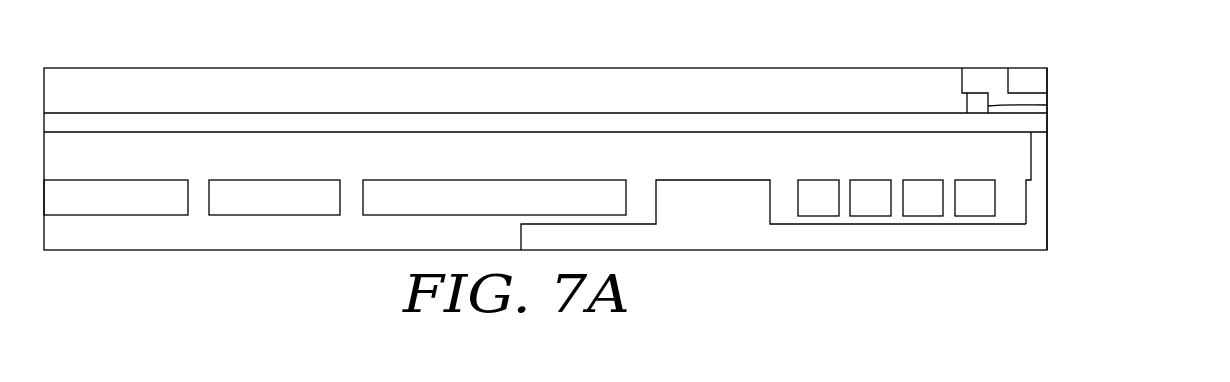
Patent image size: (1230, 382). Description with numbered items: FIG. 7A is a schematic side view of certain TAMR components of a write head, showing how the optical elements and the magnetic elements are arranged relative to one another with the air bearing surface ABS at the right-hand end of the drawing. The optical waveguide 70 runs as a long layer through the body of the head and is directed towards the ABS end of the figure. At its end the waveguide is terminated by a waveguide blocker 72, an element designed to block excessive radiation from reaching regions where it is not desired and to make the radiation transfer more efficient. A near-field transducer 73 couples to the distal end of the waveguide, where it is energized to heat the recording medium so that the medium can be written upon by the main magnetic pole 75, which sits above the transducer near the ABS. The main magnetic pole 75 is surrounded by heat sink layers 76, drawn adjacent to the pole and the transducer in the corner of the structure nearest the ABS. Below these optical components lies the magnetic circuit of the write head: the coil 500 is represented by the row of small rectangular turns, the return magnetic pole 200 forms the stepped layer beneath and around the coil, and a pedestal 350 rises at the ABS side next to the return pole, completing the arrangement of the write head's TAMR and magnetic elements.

The optical waveguide 70 is at (905, 126).
The waveguide blocker 72 is at (1031, 124).
The near-field transducer 73 is at (1031, 110).
The main magnetic pole 75 is at (987, 80).
The heat sink layers 76 is at (975, 108).
The air bearing surface ABS is at (1068, 183).
The pedestal 350 is at (1037, 218).
The return magnetic pole 200 is at (964, 238).
The coil 500 is at (822, 203).